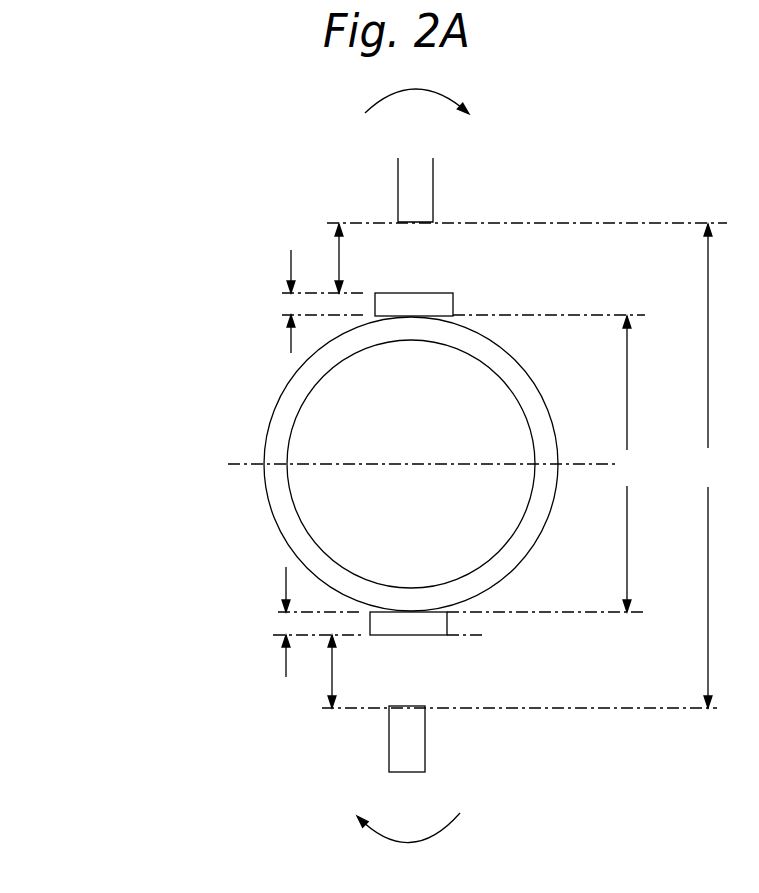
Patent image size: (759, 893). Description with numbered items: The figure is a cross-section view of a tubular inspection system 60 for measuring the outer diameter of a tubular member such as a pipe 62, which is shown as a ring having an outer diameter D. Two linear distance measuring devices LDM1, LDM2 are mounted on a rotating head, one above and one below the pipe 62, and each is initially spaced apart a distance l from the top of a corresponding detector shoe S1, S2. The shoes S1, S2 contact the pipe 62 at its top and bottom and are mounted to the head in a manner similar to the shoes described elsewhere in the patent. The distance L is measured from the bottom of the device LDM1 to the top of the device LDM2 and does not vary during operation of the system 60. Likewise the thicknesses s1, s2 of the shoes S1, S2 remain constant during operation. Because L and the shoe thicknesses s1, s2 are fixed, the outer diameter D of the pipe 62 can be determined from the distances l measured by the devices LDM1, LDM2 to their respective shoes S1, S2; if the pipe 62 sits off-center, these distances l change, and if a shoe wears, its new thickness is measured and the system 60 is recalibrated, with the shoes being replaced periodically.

The system 60 is at (262, 252).
The pipe 62 is at (517, 378).
The detector shoe S1 is at (453, 306).
The detector shoe S2 is at (433, 625).
The linear distance measuring device LDM1 is at (422, 198).
The linear distance measuring device LDM2 is at (412, 730).
The distance l is at (338, 257).
The shoe thickness s1 is at (307, 301).
The shoe thickness s2 is at (362, 622).
The outer diameter D is at (632, 464).
The distance L is at (709, 466).